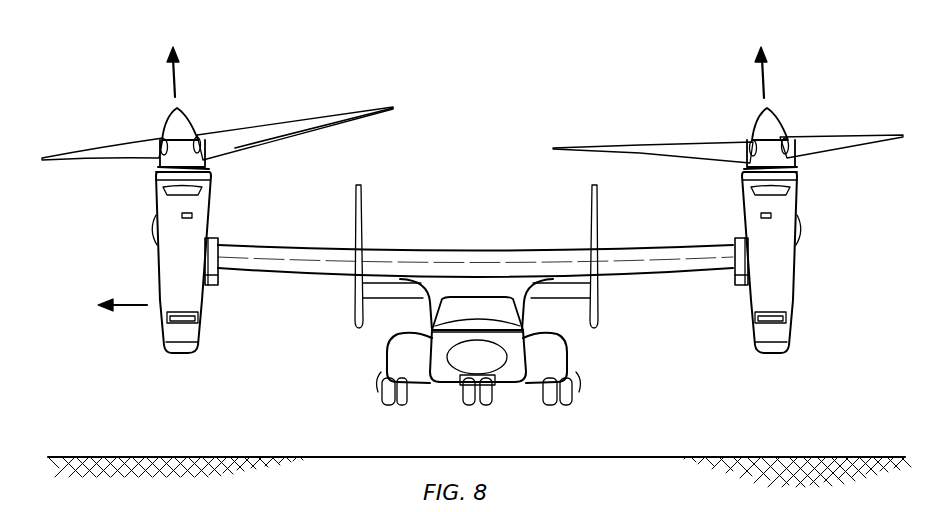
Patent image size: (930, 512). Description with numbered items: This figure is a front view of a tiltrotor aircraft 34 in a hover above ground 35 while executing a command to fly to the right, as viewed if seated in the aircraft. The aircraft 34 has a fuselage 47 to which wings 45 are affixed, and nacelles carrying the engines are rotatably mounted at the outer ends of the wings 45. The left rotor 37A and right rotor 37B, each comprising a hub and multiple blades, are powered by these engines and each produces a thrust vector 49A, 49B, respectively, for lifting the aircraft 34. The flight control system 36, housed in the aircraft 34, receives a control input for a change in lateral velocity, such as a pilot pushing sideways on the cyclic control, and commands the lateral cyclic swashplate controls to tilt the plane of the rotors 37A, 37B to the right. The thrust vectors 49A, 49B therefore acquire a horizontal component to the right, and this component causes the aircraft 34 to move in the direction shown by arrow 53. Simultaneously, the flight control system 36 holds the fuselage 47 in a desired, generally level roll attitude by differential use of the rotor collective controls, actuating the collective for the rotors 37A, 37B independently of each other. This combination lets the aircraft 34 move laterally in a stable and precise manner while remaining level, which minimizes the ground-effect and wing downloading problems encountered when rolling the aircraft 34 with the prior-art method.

The tiltrotor aircraft 34 is at (512, 76).
The ground 35 is at (770, 457).
The flight control system 36 is at (478, 322).
The left rotor 37A is at (738, 128).
The right rotor 37B is at (203, 122).
The wing 45 is at (292, 246).
The fuselage 47 is at (570, 358).
The thrust vector 49A is at (767, 79).
The thrust vector 49B is at (171, 82).
The arrow 53 is at (130, 307).